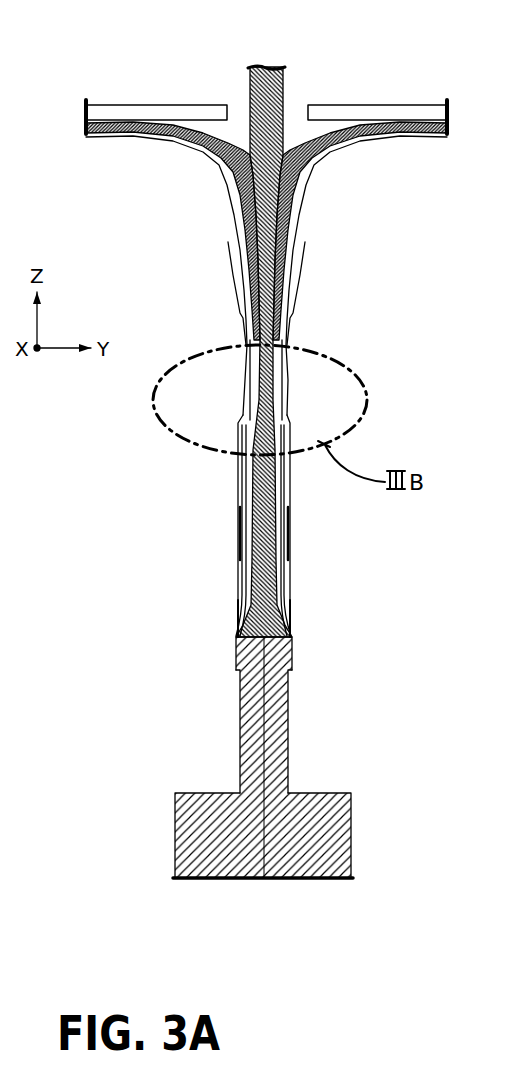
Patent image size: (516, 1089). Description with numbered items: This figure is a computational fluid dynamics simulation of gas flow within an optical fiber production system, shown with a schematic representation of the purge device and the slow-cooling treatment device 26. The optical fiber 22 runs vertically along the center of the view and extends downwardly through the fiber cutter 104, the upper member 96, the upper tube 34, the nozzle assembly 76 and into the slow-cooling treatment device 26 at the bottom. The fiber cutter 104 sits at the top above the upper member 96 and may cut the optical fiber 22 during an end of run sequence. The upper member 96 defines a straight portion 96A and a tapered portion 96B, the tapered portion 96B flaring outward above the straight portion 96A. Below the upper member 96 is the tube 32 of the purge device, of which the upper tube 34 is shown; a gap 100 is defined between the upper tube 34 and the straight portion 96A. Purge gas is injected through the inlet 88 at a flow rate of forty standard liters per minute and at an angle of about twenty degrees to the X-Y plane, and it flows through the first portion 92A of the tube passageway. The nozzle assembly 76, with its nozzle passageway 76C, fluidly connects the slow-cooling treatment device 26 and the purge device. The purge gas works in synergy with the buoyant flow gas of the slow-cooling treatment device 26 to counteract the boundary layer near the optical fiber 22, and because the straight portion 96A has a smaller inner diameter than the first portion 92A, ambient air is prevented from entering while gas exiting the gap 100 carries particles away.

The fiber cutter 104 is at (377, 107).
The upper member 96 is at (322, 311).
The tapered portion 96B is at (297, 275).
The straight portion 96A is at (284, 369).
The gap 100 is at (230, 403).
The nozzle assembly 76 is at (213, 580).
The upper tube 34 is at (291, 538).
The inlet 88 is at (291, 622).
The nozzle passageway 76C is at (255, 655).
The first portion 92A is at (291, 652).
The tube 32 is at (318, 640).
The slow-cooling treatment device 26 is at (175, 826).
The optical fiber 22 is at (263, 858).